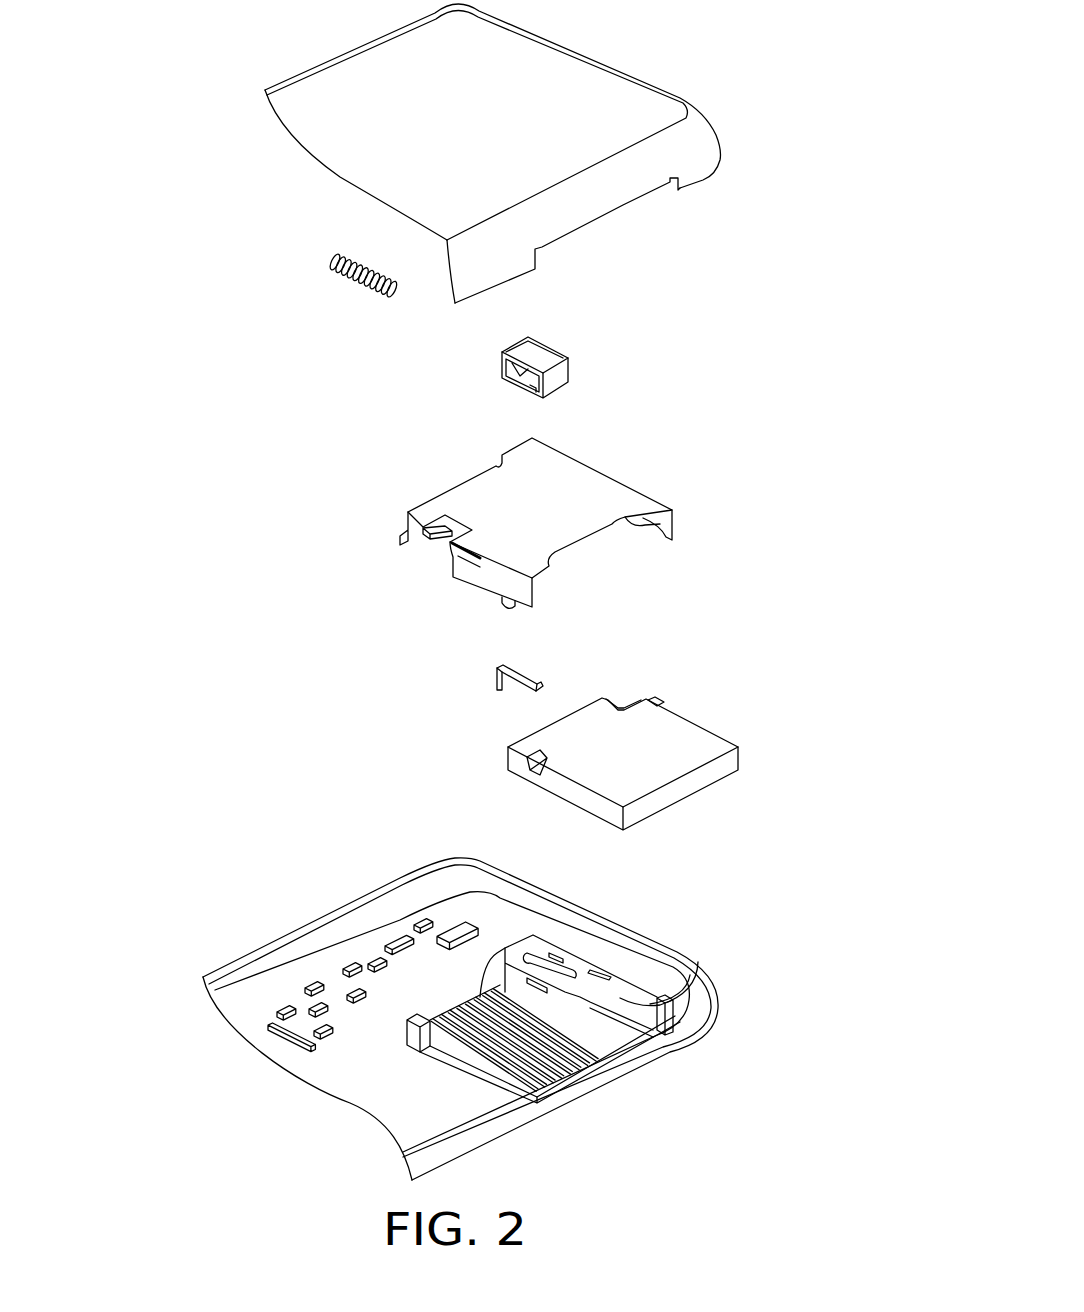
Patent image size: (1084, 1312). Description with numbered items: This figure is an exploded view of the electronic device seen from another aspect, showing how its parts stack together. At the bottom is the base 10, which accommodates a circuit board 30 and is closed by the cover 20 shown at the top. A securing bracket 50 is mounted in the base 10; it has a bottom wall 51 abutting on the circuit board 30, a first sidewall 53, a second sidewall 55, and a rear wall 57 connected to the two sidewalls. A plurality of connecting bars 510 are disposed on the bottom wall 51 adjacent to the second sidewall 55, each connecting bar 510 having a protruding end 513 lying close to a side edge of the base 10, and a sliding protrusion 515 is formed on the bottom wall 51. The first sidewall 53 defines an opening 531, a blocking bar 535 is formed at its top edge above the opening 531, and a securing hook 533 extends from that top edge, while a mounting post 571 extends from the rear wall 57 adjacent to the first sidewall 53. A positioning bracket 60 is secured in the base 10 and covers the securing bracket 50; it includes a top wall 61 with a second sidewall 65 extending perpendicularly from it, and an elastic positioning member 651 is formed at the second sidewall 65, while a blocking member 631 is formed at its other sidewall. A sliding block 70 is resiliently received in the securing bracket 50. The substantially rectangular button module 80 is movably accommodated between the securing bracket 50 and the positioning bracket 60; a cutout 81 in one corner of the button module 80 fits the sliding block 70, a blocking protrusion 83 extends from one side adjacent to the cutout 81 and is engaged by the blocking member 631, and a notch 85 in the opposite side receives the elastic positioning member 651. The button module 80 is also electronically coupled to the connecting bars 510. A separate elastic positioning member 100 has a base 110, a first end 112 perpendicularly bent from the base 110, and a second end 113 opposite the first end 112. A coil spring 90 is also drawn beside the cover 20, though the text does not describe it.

The base 10 is at (292, 935).
The cover 20 is at (683, 71).
The circuit board 30 is at (337, 1060).
The securing bracket 50 is at (542, 999).
The bottom wall 51 is at (603, 1043).
The first sidewall 53 is at (640, 921).
The second sidewall 55 is at (457, 1053).
The rear wall 57 is at (528, 901).
The positioning bracket 60 is at (509, 518).
The top wall 61 is at (493, 497).
The second sidewall 65 is at (487, 580).
The sliding block 70 is at (568, 341).
The button module 80 is at (640, 724).
The cutout 81 is at (625, 703).
The blocking protrusion 83 is at (656, 705).
The notch 85 is at (531, 769).
The spring 90 is at (336, 258).
The elastic positioning member 100 is at (482, 691).
The base 110 is at (518, 675).
The first end 112 is at (497, 685).
The second end 113 is at (580, 669).
The connecting bars 510 is at (457, 1053).
The protruding end 513 is at (487, 1050).
The sliding protrusion 515 is at (638, 1055).
The opening 531 is at (660, 980).
The securing hook 533 is at (556, 952).
The blocking bar 535 is at (599, 971).
The mounting post 571 is at (543, 953).
The blocking member 631 is at (628, 518).
The elastic positioning member 651 is at (430, 540).